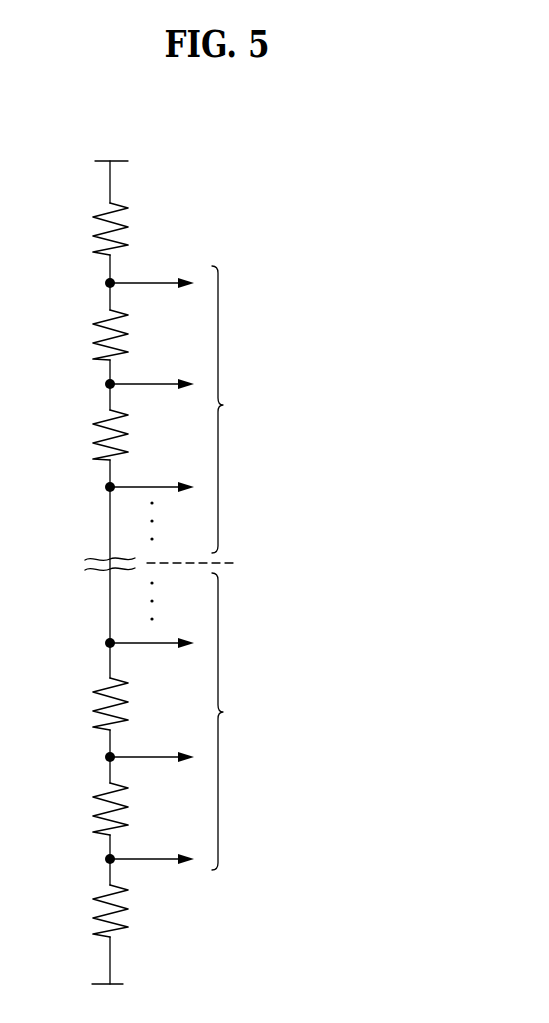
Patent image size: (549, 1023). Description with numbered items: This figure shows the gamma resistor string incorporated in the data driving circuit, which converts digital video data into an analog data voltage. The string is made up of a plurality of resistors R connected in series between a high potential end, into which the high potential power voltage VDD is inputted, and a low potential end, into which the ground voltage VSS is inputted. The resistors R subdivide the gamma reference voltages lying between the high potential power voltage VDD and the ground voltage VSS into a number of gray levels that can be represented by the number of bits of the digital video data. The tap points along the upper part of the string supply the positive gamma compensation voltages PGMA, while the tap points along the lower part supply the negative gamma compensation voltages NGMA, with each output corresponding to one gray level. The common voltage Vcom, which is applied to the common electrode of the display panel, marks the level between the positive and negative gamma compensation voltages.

The high potential power voltage VDD is at (112, 147).
The ground voltage VSS is at (108, 1001).
The resistor R is at (99, 570).
The common voltage Vcom is at (221, 563).
The positive gamma compensation voltages PGMA is at (292, 409).
The negative gamma compensation voltages NGMA is at (292, 721).